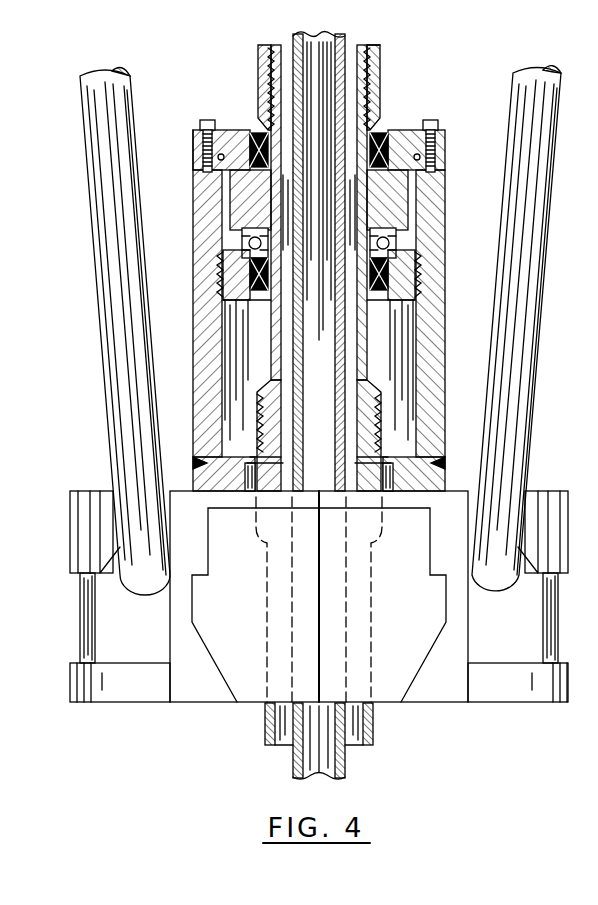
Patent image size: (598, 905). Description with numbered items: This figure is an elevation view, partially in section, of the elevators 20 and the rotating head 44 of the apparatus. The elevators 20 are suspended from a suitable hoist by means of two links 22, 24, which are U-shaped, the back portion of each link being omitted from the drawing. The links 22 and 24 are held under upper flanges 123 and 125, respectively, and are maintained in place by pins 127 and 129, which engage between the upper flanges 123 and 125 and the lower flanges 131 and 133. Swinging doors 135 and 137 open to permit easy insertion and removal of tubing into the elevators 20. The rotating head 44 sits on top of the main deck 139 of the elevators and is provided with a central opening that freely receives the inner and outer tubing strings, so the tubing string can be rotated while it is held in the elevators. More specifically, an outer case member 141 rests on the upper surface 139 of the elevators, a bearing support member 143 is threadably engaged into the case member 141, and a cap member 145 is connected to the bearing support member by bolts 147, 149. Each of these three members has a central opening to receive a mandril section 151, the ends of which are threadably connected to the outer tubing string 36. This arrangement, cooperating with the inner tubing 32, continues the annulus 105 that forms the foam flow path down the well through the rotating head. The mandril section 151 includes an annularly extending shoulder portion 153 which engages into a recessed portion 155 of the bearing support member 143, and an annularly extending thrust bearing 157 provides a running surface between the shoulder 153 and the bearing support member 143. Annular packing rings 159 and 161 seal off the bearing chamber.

The elevators 20 is at (63, 719).
The link 22 is at (100, 272).
The link 24 is at (544, 322).
The inner tubing 32 is at (292, 762).
The outer tubing string 36 is at (380, 55).
The rotating head 44 is at (186, 122).
The annulus 105 is at (283, 463).
The upper flange 123 is at (90, 490).
The upper flange 125 is at (547, 490).
The pin 127 is at (82, 628).
The pin 129 is at (543, 635).
The lower flange 131 is at (132, 704).
The lower flange 133 is at (510, 704).
The swinging door 135 is at (240, 622).
The swinging door 137 is at (430, 622).
The main deck 139 is at (458, 477).
The outer case member 141 is at (446, 325).
The bearing support member 143 is at (450, 190).
The cap member 145 is at (402, 130).
The bolt 147 is at (207, 120).
The bolt 149 is at (431, 120).
The mandril section 151 is at (283, 322).
The shoulder portion 153 is at (243, 207).
The recessed portion 155 is at (398, 213).
The thrust bearing 157 is at (248, 244).
The packing ring 159 is at (261, 133).
The packing ring 161 is at (263, 306).